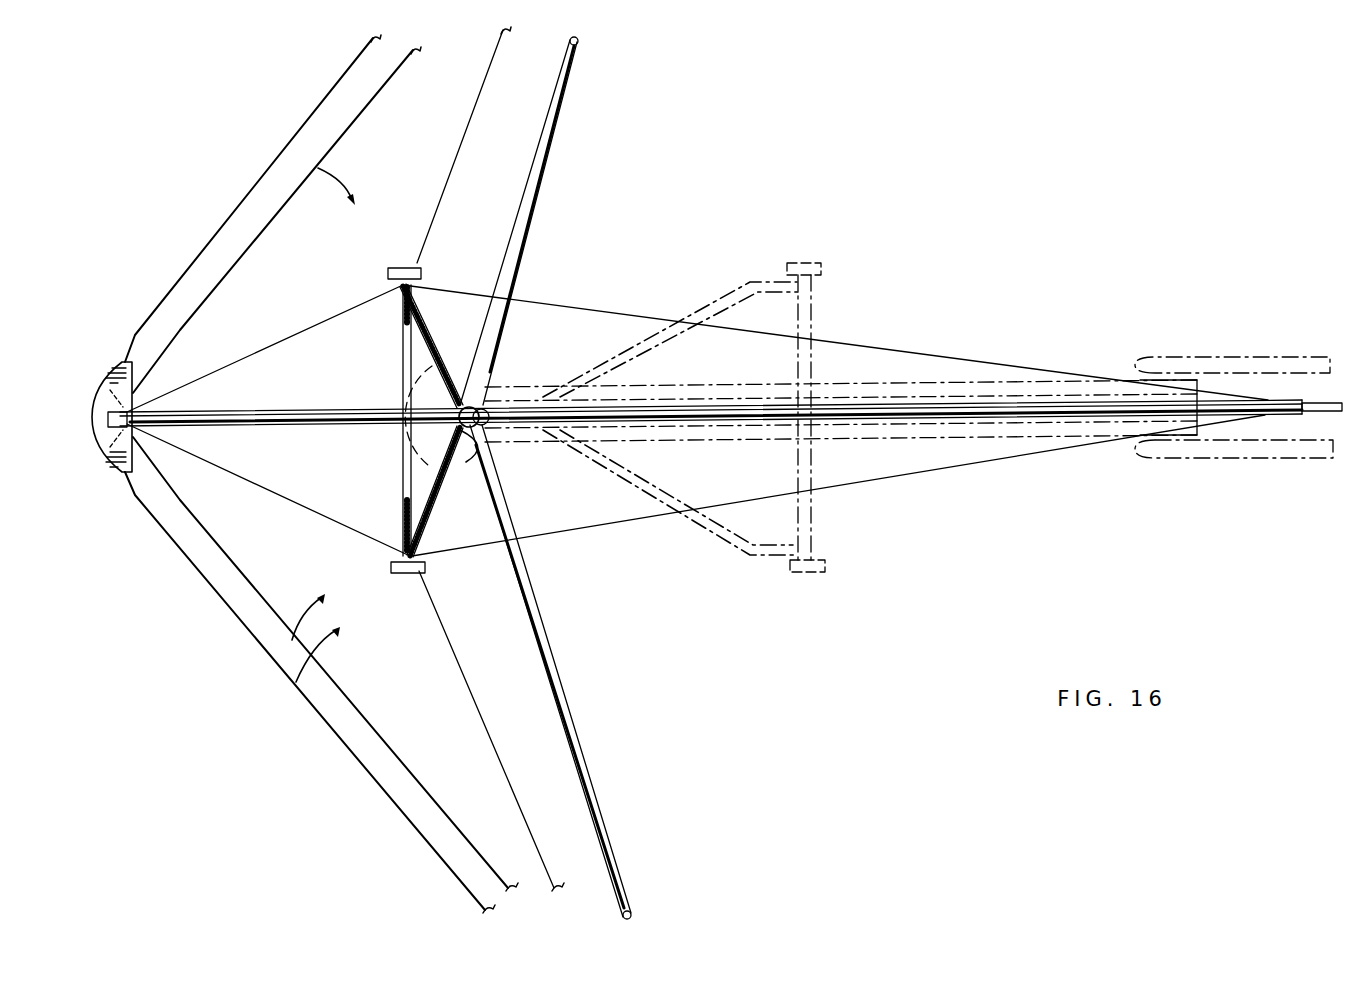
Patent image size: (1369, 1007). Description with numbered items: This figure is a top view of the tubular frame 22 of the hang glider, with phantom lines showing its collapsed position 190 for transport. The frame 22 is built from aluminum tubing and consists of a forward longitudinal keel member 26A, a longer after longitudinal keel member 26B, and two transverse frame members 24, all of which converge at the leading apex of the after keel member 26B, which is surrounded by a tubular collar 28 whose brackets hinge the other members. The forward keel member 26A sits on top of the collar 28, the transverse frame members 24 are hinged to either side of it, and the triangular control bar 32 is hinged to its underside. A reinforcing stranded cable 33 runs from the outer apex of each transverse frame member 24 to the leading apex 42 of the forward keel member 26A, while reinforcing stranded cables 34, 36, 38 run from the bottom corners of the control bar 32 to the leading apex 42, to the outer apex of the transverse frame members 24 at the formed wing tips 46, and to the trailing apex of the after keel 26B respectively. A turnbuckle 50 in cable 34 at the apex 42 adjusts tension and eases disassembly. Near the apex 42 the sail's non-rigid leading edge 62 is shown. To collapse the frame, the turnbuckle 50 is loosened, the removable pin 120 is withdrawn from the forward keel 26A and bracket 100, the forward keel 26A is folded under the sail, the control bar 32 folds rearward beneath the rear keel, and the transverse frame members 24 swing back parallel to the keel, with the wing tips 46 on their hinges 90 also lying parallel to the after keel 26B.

The frame 22 is at (546, 345).
The transverse frame member 24 is at (662, 182).
The forward longitudinal keel member 26A is at (300, 410).
The after longitudinal keel member 26B is at (753, 410).
The tubular collar 28 is at (486, 466).
The control bar 32 is at (400, 518).
The reinforcing stranded cable 33 is at (248, 250).
The reinforcing stranded cable 34 is at (296, 333).
The reinforcing stranded cable 36 is at (433, 218).
The reinforcing stranded cable 38 is at (638, 912).
The leading apex 42 is at (103, 397).
The wing tip 46 is at (1204, 452).
The turnbuckle 50 is at (131, 400).
The leading edge 62 is at (190, 268).
The hinge 90 is at (1197, 438).
The bracket 100 is at (445, 372).
The removable pin 120 is at (403, 457).
The collapsed position 190 is at (621, 340).